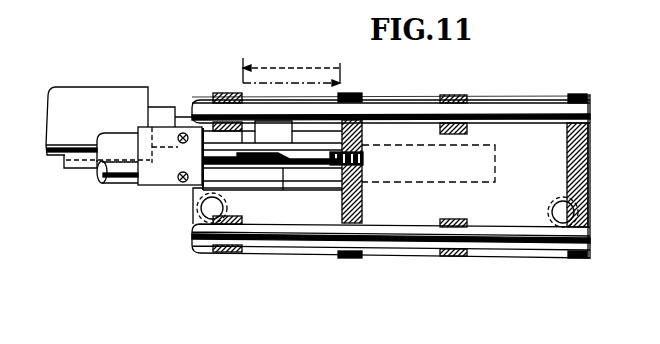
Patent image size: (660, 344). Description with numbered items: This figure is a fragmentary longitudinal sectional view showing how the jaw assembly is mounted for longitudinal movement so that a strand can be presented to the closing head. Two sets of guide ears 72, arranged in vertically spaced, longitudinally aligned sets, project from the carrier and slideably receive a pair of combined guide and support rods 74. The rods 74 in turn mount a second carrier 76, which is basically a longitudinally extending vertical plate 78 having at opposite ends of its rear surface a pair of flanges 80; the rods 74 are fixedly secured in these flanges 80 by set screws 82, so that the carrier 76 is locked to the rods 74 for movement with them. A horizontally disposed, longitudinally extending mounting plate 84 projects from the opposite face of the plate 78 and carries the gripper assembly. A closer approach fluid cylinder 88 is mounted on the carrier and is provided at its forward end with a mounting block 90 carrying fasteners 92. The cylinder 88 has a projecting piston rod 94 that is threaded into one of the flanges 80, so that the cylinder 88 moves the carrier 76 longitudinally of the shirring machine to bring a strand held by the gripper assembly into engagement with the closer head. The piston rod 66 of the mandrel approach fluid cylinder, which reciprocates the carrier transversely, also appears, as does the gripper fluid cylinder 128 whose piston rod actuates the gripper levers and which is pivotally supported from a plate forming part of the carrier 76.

The gripper fluid cylinder 128 is at (85, 106).
The fasteners 92 is at (183, 133).
The guide ears 72 is at (226, 92).
The set screws 82 is at (357, 94).
The second carrier 76 is at (405, 99).
The combined guide and support rods 74 is at (528, 119).
The mounting plate 84 is at (490, 160).
The flanges 80 is at (585, 178).
The piston rod 94 is at (305, 168).
The closer approach fluid cylinder 88 is at (117, 186).
The mounting block 90 is at (150, 187).
The piston rod 66 is at (200, 210).
The vertical plate 78 is at (493, 252).